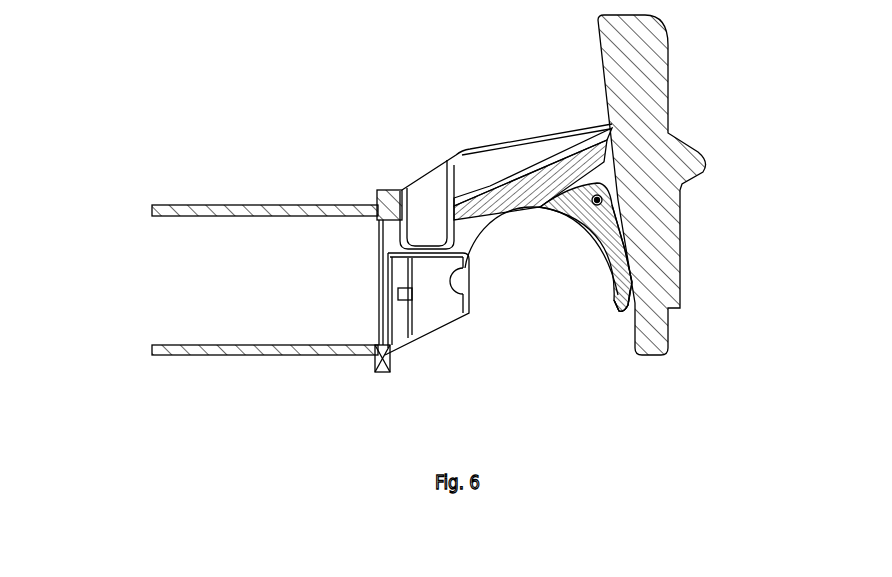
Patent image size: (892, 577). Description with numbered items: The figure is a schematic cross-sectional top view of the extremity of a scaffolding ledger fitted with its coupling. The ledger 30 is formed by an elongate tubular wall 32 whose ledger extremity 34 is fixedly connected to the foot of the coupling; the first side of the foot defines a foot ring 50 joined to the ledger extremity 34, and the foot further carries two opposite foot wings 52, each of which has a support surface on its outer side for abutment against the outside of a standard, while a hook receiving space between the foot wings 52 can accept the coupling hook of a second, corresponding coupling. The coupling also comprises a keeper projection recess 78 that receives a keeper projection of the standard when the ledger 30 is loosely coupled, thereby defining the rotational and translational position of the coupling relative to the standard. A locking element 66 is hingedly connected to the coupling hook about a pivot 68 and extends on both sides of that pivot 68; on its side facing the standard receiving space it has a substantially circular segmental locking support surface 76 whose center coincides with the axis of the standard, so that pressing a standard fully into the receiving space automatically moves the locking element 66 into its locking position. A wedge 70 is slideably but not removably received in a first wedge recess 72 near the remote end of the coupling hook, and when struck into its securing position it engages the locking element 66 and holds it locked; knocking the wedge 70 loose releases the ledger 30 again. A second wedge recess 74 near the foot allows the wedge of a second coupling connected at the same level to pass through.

The ledger 30 is at (158, 185).
The tubular wall 32 is at (173, 353).
The ledger extremity 34 is at (363, 187).
The foot ring 50 is at (390, 372).
The foot wing 52 is at (428, 318).
The locking element 66 is at (615, 307).
The pivot 68 is at (590, 185).
The wedge 70 is at (647, 75).
The first wedge recess 72 is at (623, 208).
The second wedge recess 74 is at (424, 200).
The locking support surface 76 is at (600, 250).
The keeper projection recess 78 is at (466, 280).